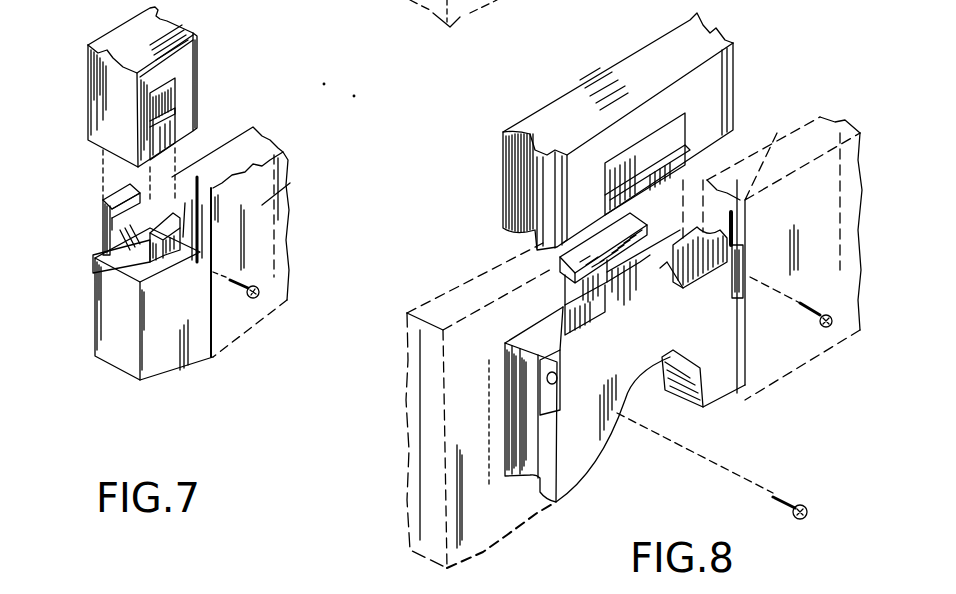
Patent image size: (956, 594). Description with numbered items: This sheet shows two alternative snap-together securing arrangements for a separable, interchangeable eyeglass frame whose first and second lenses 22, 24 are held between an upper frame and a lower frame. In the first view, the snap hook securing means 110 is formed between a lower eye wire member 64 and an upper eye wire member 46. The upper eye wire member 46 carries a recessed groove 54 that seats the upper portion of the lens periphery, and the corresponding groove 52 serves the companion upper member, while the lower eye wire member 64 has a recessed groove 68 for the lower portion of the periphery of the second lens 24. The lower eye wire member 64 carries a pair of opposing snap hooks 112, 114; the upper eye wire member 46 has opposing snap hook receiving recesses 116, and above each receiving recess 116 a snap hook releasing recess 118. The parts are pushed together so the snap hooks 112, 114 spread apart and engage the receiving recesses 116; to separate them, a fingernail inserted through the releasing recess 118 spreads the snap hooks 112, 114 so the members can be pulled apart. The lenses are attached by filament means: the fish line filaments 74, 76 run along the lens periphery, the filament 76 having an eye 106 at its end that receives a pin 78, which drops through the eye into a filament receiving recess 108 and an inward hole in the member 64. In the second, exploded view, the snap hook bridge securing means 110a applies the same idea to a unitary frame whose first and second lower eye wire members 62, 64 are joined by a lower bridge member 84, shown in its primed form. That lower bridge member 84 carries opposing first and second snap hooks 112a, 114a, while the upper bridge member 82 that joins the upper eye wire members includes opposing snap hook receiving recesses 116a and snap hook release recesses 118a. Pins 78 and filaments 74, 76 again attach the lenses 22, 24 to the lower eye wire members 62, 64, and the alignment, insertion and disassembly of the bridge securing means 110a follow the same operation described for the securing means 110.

In FIG. 8, the first lens 22 is at (803, 147).
In FIG. 7, the second lens 24 is at (255, 157).
In FIG. 8, the second lens 24 is at (450, 317).
In FIG. 7, the second upper eye wire member 46 is at (113, 87).
In FIG. 8, the recessed groove 52 is at (712, 30).
In FIG. 8, the recessed groove 54 is at (522, 158).
In FIG. 8, the first lower eye wire member 62 is at (713, 383).
In FIG. 7, the second lower eye wire member 64 is at (130, 350).
In FIG. 8, the second lower eye wire member 64 is at (570, 447).
In FIG. 7, the recessed groove 68 is at (180, 172).
In FIG. 8, the first fish line filament 74 is at (737, 227).
In FIG. 7, the second fish line filament 76 is at (185, 203).
In FIG. 7, the attachment pin 78 is at (258, 284).
In FIG. 8, the attachment pin 78 is at (817, 307).
In FIG. 8, the upper bridge member 82 is at (590, 110).
In FIG. 8, the lower bridge member 84 is at (632, 355).
In FIG. 7, the eye 106 is at (293, 183).
In FIG. 7, the filament receiving recess 108 is at (313, 163).
In FIG. 7, the snap hook securing means 110 is at (90, 262).
In FIG. 8, the snap hook bridge securing means 110a is at (507, 242).
In FIG. 7, the snap hook 112 is at (103, 213).
In FIG. 8, the first snap hook 112a is at (643, 242).
In FIG. 7, the snap hook 114 is at (150, 270).
In FIG. 8, the second snap hook 114a is at (667, 262).
In FIG. 7, the snap hook receiving recess 116 is at (150, 125).
In FIG. 8, the snap hook receiving recess 116a is at (655, 110).
In FIG. 7, the snap hook releasing recess 118 is at (173, 92).
In FIG. 8, the snap hook release recess 118a is at (647, 137).